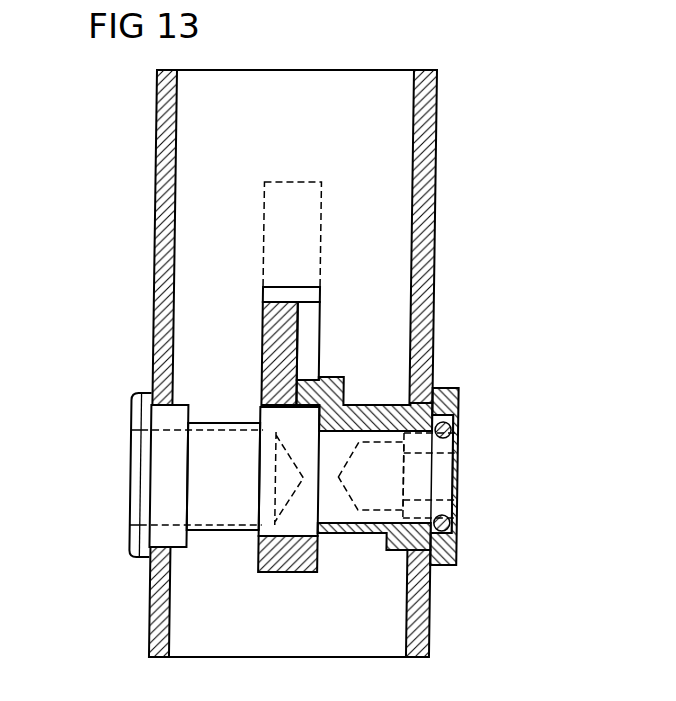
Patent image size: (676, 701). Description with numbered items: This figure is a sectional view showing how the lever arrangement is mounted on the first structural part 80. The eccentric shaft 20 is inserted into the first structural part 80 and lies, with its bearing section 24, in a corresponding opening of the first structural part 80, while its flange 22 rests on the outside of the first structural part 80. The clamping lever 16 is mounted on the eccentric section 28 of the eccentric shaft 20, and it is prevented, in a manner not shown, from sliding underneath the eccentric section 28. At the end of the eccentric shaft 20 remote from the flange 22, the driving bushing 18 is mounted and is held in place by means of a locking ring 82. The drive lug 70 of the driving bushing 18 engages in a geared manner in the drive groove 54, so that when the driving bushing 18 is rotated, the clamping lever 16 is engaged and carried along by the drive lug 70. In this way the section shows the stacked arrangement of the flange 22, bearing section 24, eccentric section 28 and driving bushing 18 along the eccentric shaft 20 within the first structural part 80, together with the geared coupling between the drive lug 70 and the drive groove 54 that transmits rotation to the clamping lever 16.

The first structural part 80 is at (428, 250).
The clamping lever 16 is at (274, 341).
The drive groove 54 is at (316, 338).
The drive lug 70 is at (334, 380).
The driving bushing 18 is at (468, 399).
The locking ring 82 is at (456, 522).
The eccentric section 28 is at (312, 527).
The eccentric shaft 20 is at (229, 518).
The bearing section 24 is at (168, 480).
The flange 22 is at (153, 554).